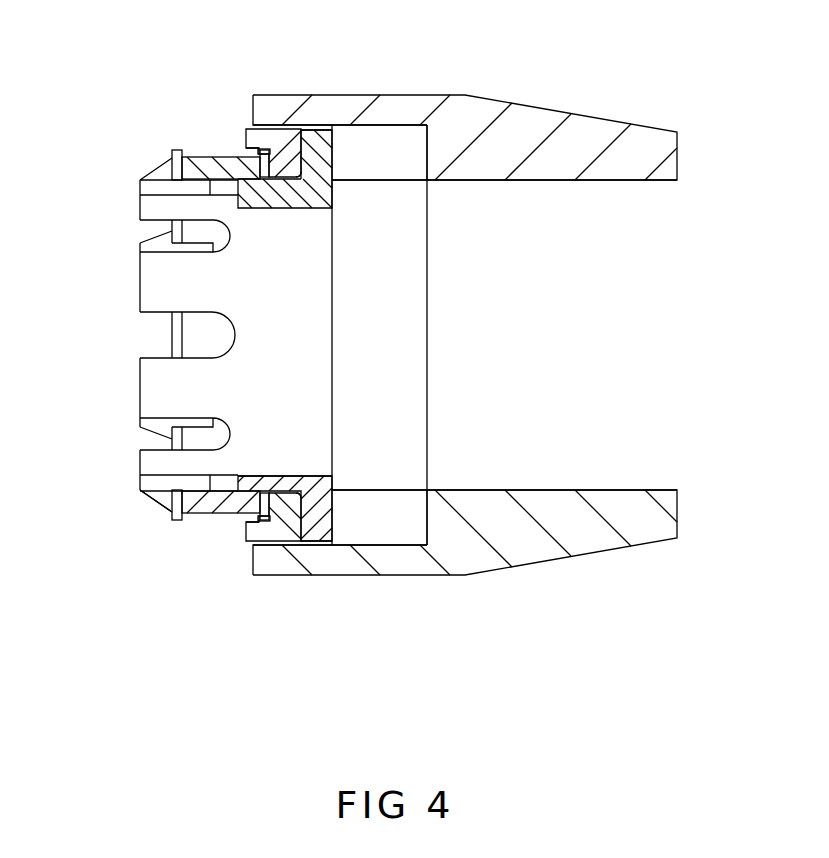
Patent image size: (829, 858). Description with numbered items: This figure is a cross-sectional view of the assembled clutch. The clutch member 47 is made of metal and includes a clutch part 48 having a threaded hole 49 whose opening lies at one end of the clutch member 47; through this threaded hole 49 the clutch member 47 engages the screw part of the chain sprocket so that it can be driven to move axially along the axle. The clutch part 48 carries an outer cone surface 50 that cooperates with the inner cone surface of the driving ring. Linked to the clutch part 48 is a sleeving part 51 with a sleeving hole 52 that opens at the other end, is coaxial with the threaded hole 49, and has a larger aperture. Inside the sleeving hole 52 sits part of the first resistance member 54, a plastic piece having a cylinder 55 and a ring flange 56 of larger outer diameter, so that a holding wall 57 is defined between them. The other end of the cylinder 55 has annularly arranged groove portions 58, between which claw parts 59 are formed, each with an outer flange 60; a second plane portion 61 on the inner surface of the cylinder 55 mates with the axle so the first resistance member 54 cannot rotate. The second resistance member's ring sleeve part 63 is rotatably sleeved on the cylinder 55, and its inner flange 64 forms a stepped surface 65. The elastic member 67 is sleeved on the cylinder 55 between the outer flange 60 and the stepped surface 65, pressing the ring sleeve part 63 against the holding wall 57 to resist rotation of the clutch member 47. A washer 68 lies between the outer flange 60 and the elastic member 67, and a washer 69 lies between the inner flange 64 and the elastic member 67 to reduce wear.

The clutch member 47 is at (540, 673).
The clutch part 48 is at (530, 541).
The threaded hole 49 is at (610, 350).
The outer cone surface 50 is at (588, 112).
The sleeving part 51 is at (385, 556).
The sleeving hole 52 is at (365, 478).
The first resistance member 54 is at (138, 525).
The cylinder 55 is at (253, 483).
The ring flange 56 is at (328, 158).
The holding wall 57 is at (313, 163).
The groove portions 58 is at (155, 337).
The claw part 59 is at (148, 208).
The outer flange 60 is at (160, 177).
The second plane portion 61 is at (287, 209).
The ring sleeve part 63 is at (289, 155).
The inner flange 64 is at (313, 140).
The stepped surface 65 is at (282, 143).
The elastic member 67 is at (213, 158).
The washer 68 is at (175, 150).
The washer 69 is at (260, 149).